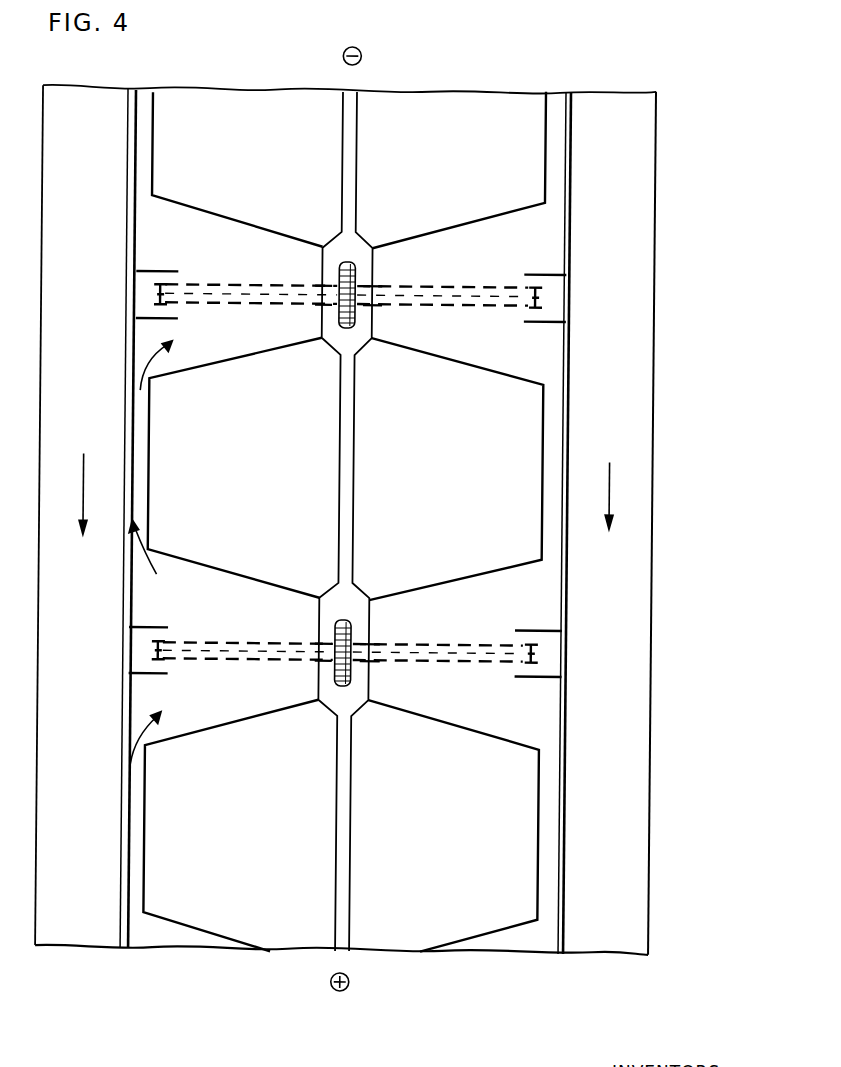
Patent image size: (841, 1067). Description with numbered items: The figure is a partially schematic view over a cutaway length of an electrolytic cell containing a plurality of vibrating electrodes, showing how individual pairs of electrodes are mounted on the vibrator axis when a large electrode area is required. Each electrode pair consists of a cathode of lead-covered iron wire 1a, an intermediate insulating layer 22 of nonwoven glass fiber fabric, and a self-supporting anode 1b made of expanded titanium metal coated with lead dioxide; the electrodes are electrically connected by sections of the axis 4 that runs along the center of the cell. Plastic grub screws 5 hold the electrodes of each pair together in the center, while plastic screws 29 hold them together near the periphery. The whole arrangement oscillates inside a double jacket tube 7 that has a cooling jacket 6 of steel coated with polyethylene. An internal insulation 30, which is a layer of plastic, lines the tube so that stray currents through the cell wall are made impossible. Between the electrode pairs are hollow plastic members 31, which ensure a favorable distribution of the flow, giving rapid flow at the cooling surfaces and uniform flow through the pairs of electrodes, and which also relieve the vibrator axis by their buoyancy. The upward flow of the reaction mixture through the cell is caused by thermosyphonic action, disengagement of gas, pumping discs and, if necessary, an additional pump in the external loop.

The cathode of lead-covered iron wire 1a is at (457, 646).
The self-supporting anode 1b is at (469, 662).
The axis 4 is at (346, 479).
The grub screws 5 is at (358, 280).
The cooling jacket 6 is at (635, 541).
The double jacket tube 7 is at (565, 406).
The intermediate insulating layer 22 is at (515, 662).
The plastic screws 29 is at (533, 644).
The internal insulation 30 is at (573, 226).
The hollow plastic members 31 is at (466, 385).